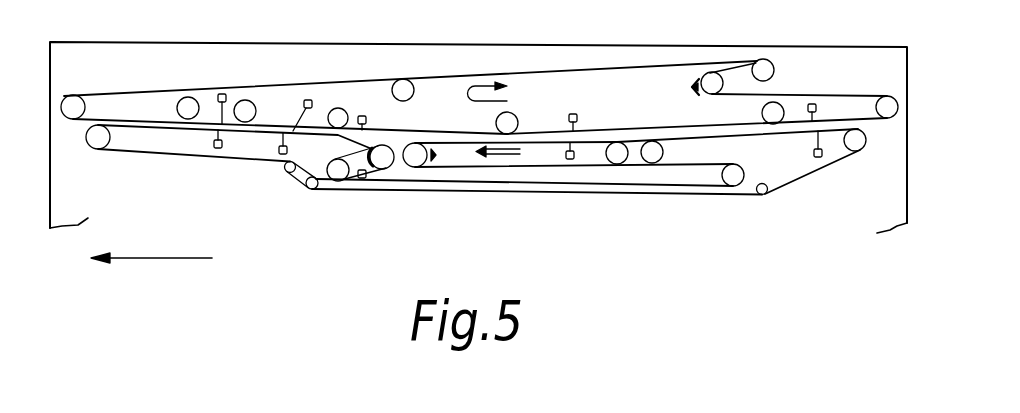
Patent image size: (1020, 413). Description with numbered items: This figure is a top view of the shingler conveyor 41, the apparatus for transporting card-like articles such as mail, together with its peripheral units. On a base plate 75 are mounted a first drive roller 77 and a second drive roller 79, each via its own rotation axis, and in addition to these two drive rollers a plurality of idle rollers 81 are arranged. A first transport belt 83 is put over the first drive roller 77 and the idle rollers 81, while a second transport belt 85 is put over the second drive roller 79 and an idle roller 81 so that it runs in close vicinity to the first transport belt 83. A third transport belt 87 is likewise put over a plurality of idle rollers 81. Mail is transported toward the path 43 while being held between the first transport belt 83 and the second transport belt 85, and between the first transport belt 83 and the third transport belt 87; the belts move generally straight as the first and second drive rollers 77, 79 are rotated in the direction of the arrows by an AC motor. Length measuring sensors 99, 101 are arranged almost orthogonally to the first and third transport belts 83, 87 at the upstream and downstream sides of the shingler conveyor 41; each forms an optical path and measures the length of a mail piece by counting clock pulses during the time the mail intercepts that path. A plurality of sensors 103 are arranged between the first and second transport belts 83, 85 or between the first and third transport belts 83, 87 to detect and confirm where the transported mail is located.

The shingler conveyor 41 is at (482, 197).
The path 43 is at (230, 281).
The base plate 75 is at (573, 55).
The first drive roller 77 is at (712, 72).
The second drive roller 79 is at (415, 168).
The idle rollers 81 is at (72, 97).
The first transport belt 83 is at (462, 72).
The second transport belt 85 is at (531, 168).
The third transport belt 87 is at (317, 193).
The length measuring sensor 99 is at (814, 136).
The length measuring sensor 101 is at (214, 136).
The sensors 103 is at (377, 127).